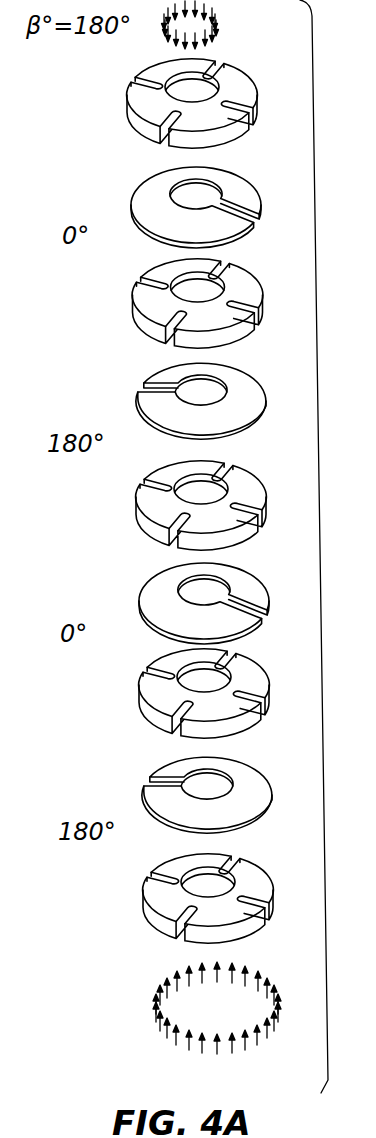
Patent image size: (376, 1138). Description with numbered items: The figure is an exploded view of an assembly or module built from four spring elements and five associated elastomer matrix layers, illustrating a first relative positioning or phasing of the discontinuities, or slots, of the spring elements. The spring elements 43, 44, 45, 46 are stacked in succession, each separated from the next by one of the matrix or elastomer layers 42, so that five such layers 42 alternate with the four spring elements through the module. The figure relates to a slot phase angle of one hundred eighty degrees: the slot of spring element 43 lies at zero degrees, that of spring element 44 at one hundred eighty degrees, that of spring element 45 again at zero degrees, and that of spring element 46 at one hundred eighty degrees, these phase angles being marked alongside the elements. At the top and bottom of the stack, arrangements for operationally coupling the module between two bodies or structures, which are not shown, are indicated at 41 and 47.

The coupling arrangement 41 is at (232, 20).
The elastomer matrix layer 42 is at (270, 96).
The spring element 43 is at (132, 206).
The spring element 44 is at (121, 408).
The spring element 45 is at (131, 600).
The spring element 46 is at (131, 793).
The coupling arrangement 47 is at (289, 1014).